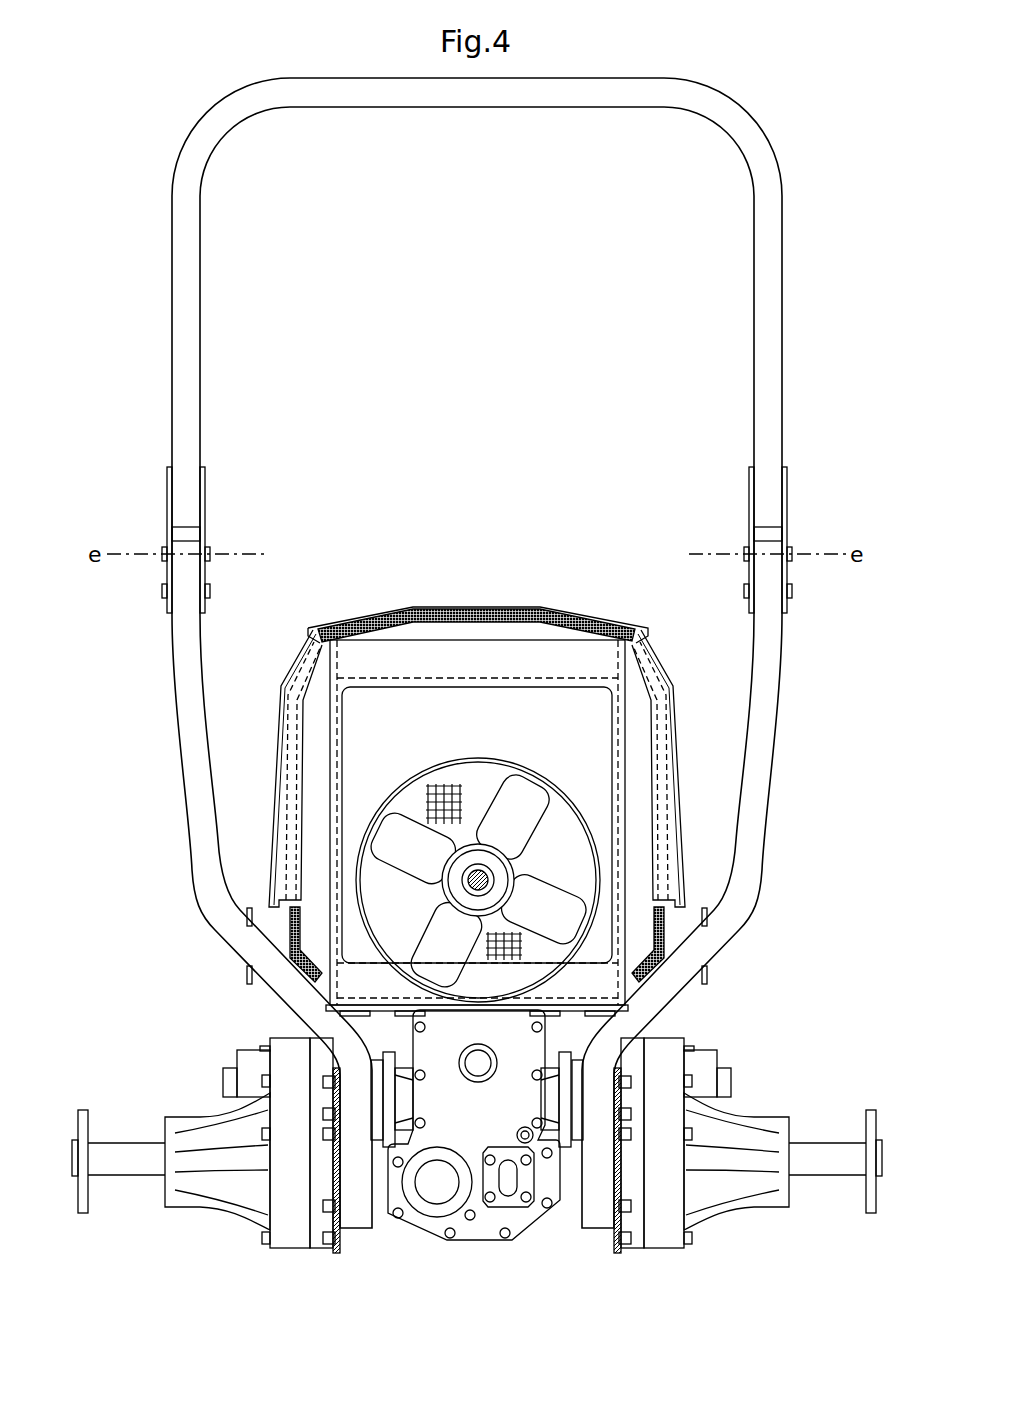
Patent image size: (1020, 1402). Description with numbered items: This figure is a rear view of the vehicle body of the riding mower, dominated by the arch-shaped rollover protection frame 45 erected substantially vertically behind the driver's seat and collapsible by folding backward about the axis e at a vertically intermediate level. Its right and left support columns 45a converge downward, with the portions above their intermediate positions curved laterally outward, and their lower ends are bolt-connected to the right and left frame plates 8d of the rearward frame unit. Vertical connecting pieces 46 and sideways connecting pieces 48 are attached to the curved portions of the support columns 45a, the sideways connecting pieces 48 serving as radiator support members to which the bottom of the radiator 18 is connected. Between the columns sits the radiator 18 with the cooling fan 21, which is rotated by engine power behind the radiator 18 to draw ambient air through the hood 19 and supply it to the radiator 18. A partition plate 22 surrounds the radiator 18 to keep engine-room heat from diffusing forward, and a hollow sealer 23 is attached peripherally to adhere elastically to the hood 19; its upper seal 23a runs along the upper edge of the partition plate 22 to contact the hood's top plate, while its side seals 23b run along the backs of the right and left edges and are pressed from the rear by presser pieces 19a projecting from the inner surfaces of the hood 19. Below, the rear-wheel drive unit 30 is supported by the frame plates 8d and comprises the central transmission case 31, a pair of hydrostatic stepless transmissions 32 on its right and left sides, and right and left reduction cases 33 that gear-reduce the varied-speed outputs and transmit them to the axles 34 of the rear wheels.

The rollover protection frame 45 is at (178, 140).
The support columns 45a is at (182, 752).
The vertical connecting pieces 46 is at (249, 906).
The sideways connecting pieces 48 is at (336, 1031).
The frame plates 8d is at (273, 1188).
The rear-wheel drive unit 30 is at (232, 1062).
The reduction cases 33 is at (180, 1118).
The axles 34 is at (130, 1173).
The central transmission case 31 is at (527, 1228).
The hydrostatic stepless transmissions 32 is at (380, 1097).
The partition plate 22 is at (385, 653).
The sealer 23 is at (478, 764).
The upper seal 23a is at (433, 618).
The side seals 23b is at (290, 925).
The radiator 18 is at (540, 635).
The hood 19 is at (495, 764).
The presser pieces 19a is at (307, 750).
The cooling fan 21 is at (507, 797).